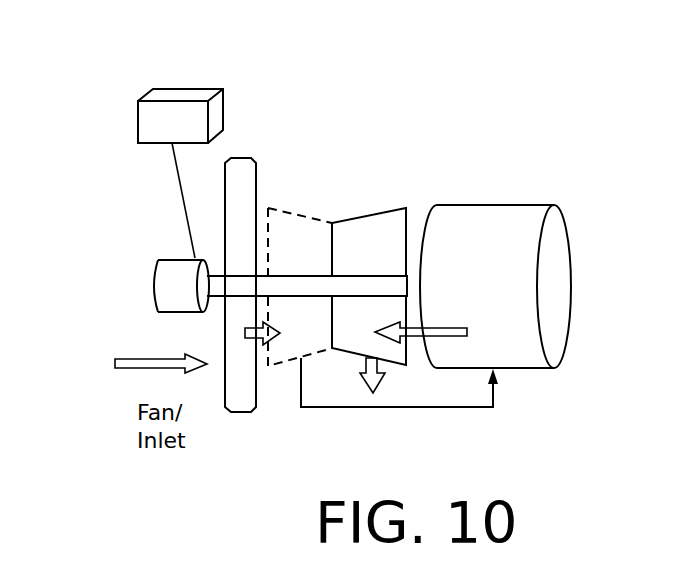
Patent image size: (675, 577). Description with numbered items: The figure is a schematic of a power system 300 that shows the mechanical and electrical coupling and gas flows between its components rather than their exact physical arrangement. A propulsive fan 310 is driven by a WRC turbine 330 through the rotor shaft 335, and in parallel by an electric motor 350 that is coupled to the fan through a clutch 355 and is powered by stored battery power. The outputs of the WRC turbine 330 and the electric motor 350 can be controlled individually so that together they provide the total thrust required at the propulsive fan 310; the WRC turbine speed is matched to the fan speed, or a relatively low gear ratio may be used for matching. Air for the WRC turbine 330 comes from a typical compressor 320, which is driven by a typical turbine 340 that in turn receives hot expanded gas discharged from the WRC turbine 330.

The power system 300 is at (441, 184).
The propulsive fan 310 is at (247, 170).
The compressor 320 is at (290, 230).
The WRC turbine 330 is at (517, 215).
The rotor shaft 335 is at (327, 287).
The turbine 340 is at (395, 352).
The electric motor 350 is at (223, 108).
The clutch 355 is at (158, 260).